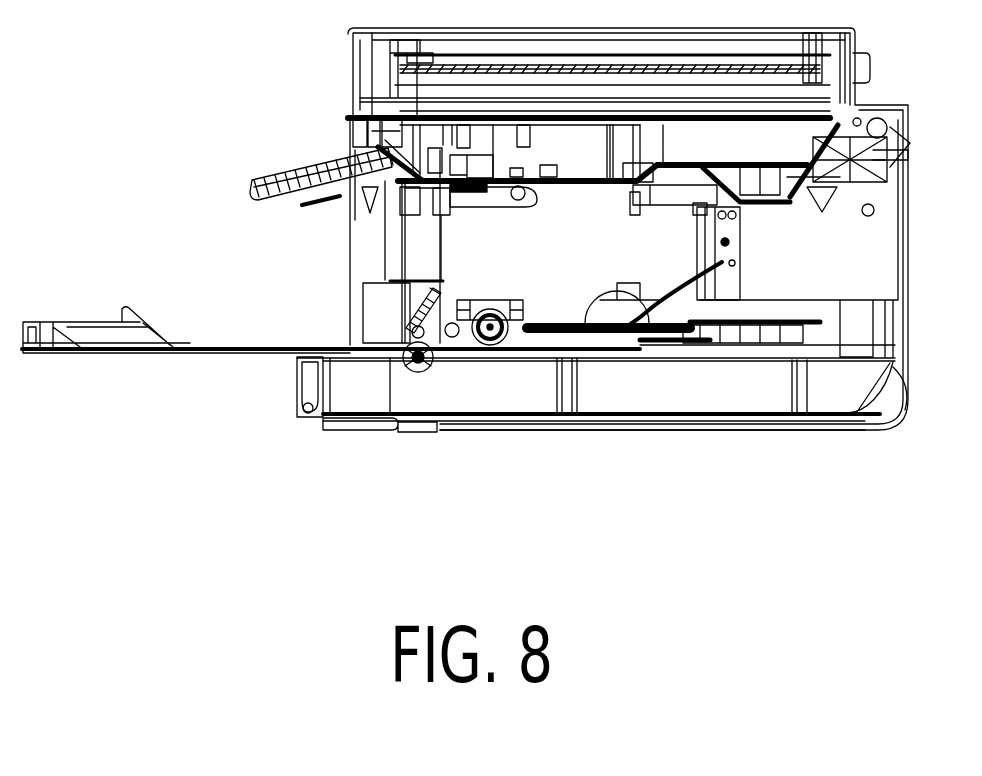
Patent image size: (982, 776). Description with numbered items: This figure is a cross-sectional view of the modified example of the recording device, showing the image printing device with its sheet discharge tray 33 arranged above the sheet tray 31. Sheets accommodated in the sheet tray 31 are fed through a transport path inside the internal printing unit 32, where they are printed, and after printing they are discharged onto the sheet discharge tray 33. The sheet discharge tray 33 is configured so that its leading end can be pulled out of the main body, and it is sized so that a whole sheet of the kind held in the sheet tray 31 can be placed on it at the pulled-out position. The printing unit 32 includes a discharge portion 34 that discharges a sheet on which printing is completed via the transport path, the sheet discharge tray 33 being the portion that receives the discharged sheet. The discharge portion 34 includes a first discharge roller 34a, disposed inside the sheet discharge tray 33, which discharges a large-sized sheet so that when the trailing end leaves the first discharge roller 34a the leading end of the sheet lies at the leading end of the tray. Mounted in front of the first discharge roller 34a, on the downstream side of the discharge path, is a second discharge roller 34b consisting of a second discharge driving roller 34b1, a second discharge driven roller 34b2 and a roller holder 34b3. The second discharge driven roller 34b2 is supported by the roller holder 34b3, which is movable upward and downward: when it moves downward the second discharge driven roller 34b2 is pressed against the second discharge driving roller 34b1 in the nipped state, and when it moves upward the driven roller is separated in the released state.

The sheet tray 31 is at (357, 387).
The printing unit 32 is at (640, 240).
The sheet discharge tray 33 is at (242, 340).
The discharge portion 34 is at (207, 145).
The first discharge roller 34a is at (483, 298).
The second discharge roller 34b is at (120, 213).
The second discharge driving roller 34b1 is at (400, 345).
The second discharge driven roller 34b2 is at (407, 323).
The roller holder 34b3 is at (430, 290).